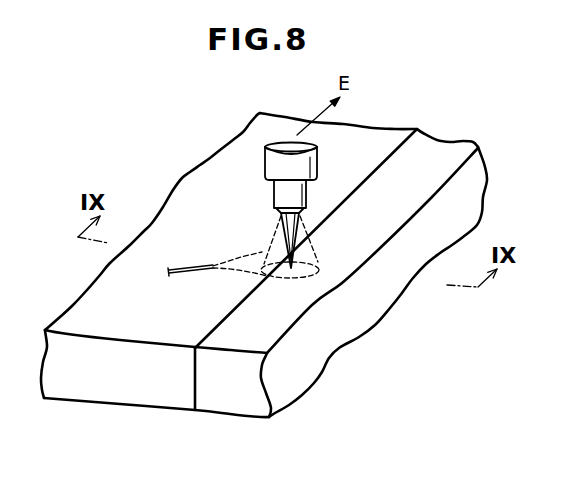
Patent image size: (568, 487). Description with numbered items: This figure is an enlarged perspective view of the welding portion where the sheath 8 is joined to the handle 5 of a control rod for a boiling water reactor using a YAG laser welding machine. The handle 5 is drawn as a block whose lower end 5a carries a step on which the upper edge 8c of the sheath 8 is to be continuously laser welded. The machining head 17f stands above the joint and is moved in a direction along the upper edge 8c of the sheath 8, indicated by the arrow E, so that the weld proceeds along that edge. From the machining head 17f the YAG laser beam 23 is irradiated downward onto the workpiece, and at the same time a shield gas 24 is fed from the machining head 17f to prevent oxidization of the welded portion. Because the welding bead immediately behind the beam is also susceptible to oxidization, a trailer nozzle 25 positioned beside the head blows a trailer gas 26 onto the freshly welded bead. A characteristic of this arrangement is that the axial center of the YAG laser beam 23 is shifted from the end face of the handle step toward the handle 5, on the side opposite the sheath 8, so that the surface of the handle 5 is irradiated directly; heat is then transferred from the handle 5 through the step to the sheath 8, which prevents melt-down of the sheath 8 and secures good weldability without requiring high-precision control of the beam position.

The handle 5 is at (302, 295).
The lower end of the handle 5a is at (212, 387).
The sheath 8 is at (176, 170).
The upper edge of the sheath 8c is at (343, 169).
The machining head 17f is at (273, 162).
The YAG laser beam 23 is at (280, 240).
The shield gas 24 is at (313, 250).
The trailer nozzle 25 is at (188, 278).
The trailer gas 26 is at (241, 257).